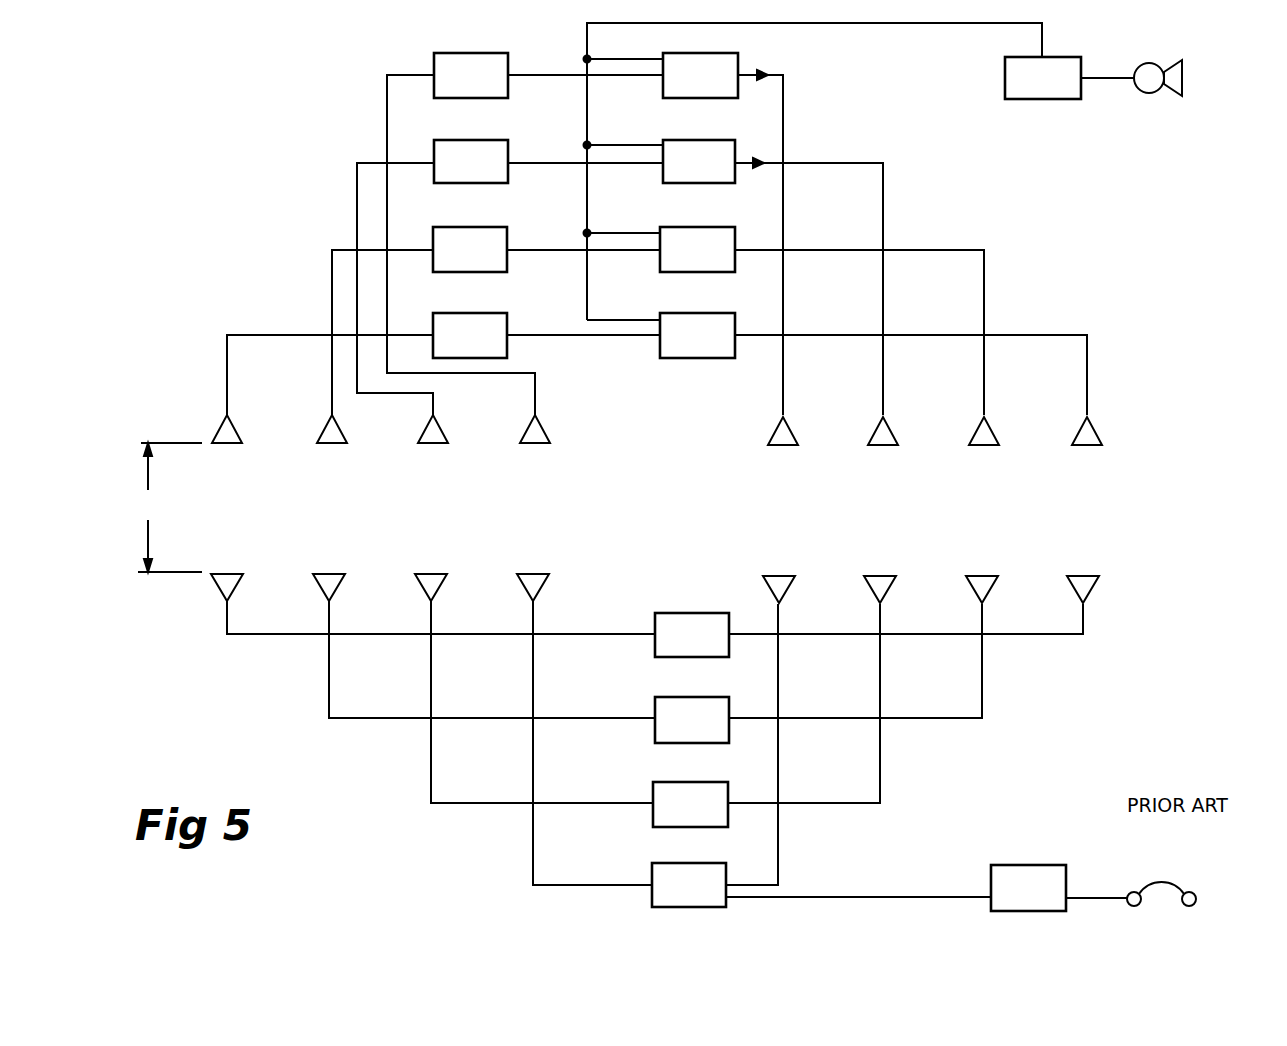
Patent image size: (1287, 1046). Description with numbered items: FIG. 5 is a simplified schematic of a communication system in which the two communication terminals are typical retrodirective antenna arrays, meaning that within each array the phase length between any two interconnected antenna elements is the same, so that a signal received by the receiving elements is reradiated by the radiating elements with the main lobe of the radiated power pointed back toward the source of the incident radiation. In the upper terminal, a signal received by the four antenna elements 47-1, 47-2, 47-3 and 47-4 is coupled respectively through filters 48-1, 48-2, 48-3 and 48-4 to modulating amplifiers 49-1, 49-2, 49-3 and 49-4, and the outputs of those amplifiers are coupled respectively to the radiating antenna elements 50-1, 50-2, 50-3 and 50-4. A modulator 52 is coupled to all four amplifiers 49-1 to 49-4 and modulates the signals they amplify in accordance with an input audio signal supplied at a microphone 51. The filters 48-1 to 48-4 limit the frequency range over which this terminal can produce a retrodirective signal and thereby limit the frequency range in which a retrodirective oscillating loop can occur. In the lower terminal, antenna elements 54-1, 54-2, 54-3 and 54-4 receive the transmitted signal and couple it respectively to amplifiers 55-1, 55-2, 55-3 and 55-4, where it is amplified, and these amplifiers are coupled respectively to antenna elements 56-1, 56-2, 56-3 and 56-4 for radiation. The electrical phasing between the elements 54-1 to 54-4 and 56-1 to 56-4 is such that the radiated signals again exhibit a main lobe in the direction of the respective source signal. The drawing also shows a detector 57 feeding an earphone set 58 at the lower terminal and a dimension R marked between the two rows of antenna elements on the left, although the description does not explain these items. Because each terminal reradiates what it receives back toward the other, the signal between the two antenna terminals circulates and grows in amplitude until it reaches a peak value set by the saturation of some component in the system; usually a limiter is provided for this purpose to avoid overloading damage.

The antenna element 47-1 is at (218, 445).
The antenna element 47-2 is at (322, 445).
The antenna element 47-3 is at (423, 445).
The antenna element 47-4 is at (530, 445).
The filter 48-1 is at (507, 352).
The filter 48-2 is at (495, 272).
The filter 48-3 is at (500, 183).
The filter 48-4 is at (455, 98).
The modulating amplifier 49-1 is at (670, 358).
The modulating amplifier 49-2 is at (720, 272).
The modulating amplifier 49-3 is at (720, 183).
The modulating amplifier 49-4 is at (672, 98).
The antenna element 50-1 is at (1080, 447).
The antenna element 50-2 is at (977, 447).
The antenna element 50-3 is at (873, 447).
The antenna element 50-4 is at (773, 447).
The microphone 51 is at (1145, 93).
The modulator 52 is at (1055, 99).
The antenna element 54-1 is at (1082, 576).
The antenna element 54-2 is at (976, 576).
The antenna element 54-3 is at (875, 576).
The antenna element 54-4 is at (767, 576).
The amplifier 55-1 is at (655, 650).
The amplifier 55-2 is at (655, 738).
The amplifier 55-3 is at (653, 818).
The amplifier 55-4 is at (652, 897).
The antenna element 56-1 is at (218, 573).
The antenna element 56-2 is at (322, 573).
The antenna element 56-3 is at (424, 573).
The antenna element 56-4 is at (528, 573).
The detector 57 is at (1027, 865).
The headphones 58 is at (1161, 872).
The antenna spacing distance R is at (170, 507).